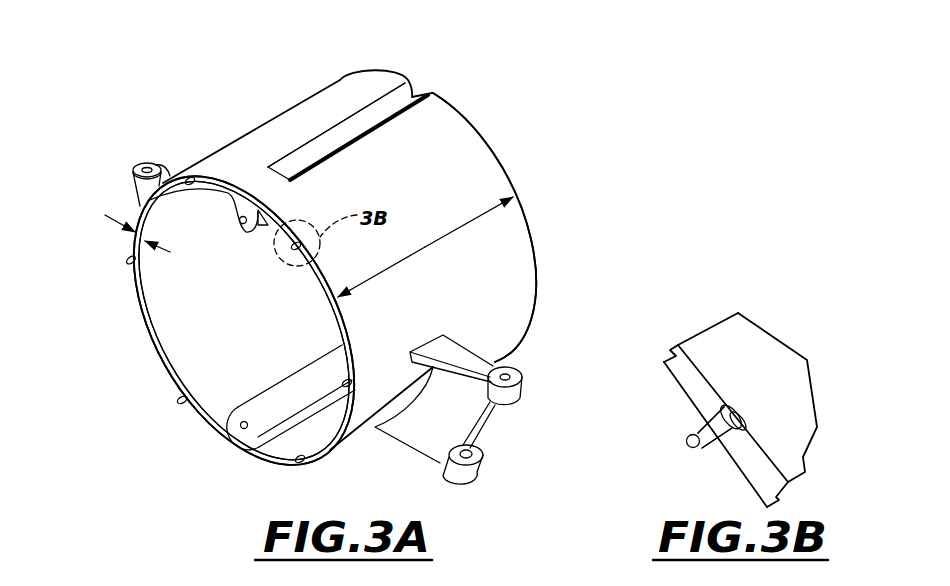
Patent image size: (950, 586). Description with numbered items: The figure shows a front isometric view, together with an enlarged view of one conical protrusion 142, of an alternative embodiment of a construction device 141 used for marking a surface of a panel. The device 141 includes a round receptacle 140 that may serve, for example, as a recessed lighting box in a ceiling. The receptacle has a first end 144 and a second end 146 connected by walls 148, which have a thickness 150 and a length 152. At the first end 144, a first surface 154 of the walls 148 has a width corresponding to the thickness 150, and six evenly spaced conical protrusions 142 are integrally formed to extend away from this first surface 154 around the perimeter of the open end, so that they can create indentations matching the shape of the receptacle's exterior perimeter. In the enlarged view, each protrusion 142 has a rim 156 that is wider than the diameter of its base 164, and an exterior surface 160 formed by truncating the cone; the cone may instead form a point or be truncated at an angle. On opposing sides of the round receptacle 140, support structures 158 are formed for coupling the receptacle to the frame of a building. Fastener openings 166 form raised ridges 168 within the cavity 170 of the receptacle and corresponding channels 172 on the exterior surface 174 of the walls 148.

In FIG. 3A, the round receptacle 140 is at (338, 78).
In FIG. 3A, the construction device 141 is at (497, 53).
In FIG. 3A, the conical protrusion 142 is at (128, 262).
In FIG. 3B, the conical protrusion 142 is at (702, 433).
In FIG. 3A, the first end 144 is at (132, 328).
In FIG. 3A, the second end 146 is at (537, 260).
In FIG. 3A, the walls 148 is at (245, 153).
In FIG. 3A, the thickness 150 is at (135, 237).
In FIG. 3A, the length 152 is at (428, 247).
In FIG. 3A, the first surface 154 is at (137, 285).
In FIG. 3B, the first surface 154 is at (740, 453).
In FIG. 3B, the rim 156 is at (732, 408).
In FIG. 3A, the support structure 158 is at (133, 160).
In FIG. 3B, the exterior surface 160 is at (689, 447).
In FIG. 3B, the base 164 is at (710, 423).
In FIG. 3A, the fastener opening 166 is at (238, 222).
In FIG. 3A, the raised ridge 168 is at (230, 205).
In FIG. 3A, the cavity 170 is at (200, 332).
In FIG. 3A, the channel 172 is at (375, 118).
In FIG. 3A, the exterior surface 174 is at (467, 148).